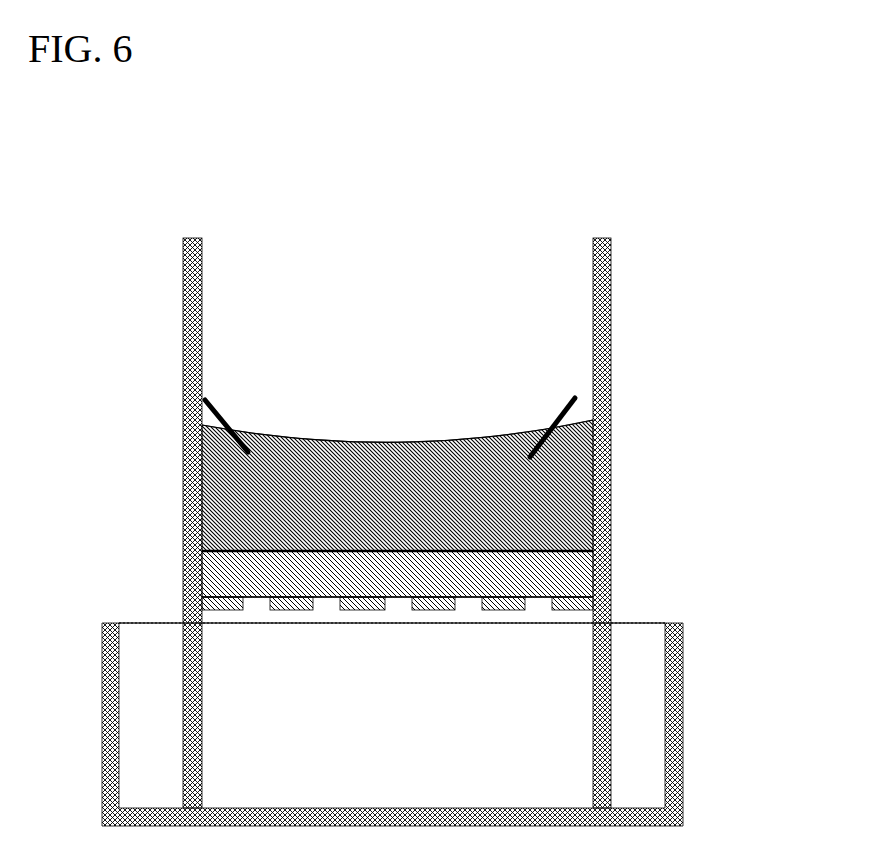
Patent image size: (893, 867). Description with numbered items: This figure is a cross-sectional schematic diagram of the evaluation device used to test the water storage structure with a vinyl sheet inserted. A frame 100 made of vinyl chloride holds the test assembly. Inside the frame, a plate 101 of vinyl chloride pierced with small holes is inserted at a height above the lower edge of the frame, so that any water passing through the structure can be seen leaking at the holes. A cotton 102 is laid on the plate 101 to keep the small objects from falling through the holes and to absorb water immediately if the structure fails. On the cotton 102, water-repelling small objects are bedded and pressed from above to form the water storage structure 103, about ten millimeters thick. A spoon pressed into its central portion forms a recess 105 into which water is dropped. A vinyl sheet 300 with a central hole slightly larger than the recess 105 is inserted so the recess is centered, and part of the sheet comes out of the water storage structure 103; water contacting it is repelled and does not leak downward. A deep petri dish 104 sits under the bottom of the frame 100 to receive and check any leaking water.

The frame 100 is at (608, 360).
The plate 101 is at (183, 582).
The cotton 102 is at (562, 573).
The water storage structure 103 is at (183, 468).
The deep petri dish 104 is at (678, 662).
The recess 105 is at (397, 432).
The vinyl sheet 300 is at (575, 405).